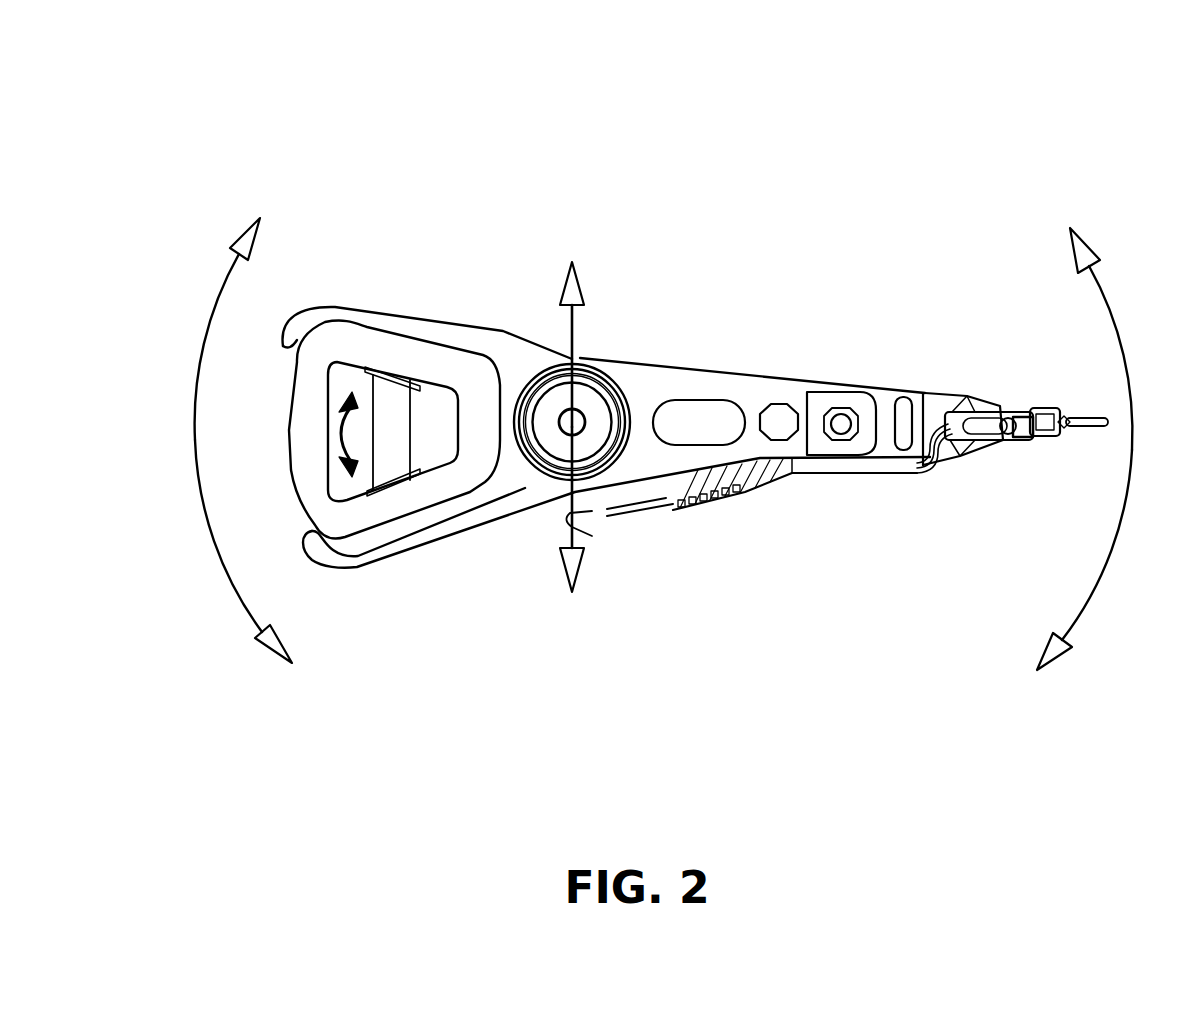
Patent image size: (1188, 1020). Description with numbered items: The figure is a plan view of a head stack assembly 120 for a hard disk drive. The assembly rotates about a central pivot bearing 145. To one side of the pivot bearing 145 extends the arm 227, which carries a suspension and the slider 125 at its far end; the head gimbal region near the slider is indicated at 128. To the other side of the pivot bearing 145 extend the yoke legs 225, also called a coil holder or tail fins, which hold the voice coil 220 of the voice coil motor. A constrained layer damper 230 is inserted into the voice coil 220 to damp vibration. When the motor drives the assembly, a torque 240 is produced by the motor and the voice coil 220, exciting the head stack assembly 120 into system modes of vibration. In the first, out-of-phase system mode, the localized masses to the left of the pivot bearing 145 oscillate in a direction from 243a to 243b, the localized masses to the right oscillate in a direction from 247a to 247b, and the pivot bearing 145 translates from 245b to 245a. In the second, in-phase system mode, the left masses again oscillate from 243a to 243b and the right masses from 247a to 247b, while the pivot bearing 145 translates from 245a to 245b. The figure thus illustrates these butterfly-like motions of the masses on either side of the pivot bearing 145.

The head stack assembly 120 is at (833, 161).
The slider 125 is at (1046, 438).
The head gimbal assembly 128 is at (1100, 380).
The pivot bearing 145 is at (587, 437).
The voice coil 220 is at (383, 355).
The yoke legs 225 is at (342, 313).
The arm 227 is at (620, 358).
The constrained layer damper 230 is at (392, 413).
The torque 240 is at (345, 431).
The oscillation direction 243a is at (230, 232).
The oscillation direction 243b is at (278, 663).
The translation direction 245a is at (587, 277).
The translation direction 245b is at (587, 572).
The oscillation direction 247a is at (1093, 240).
The oscillation direction 247b is at (1062, 663).